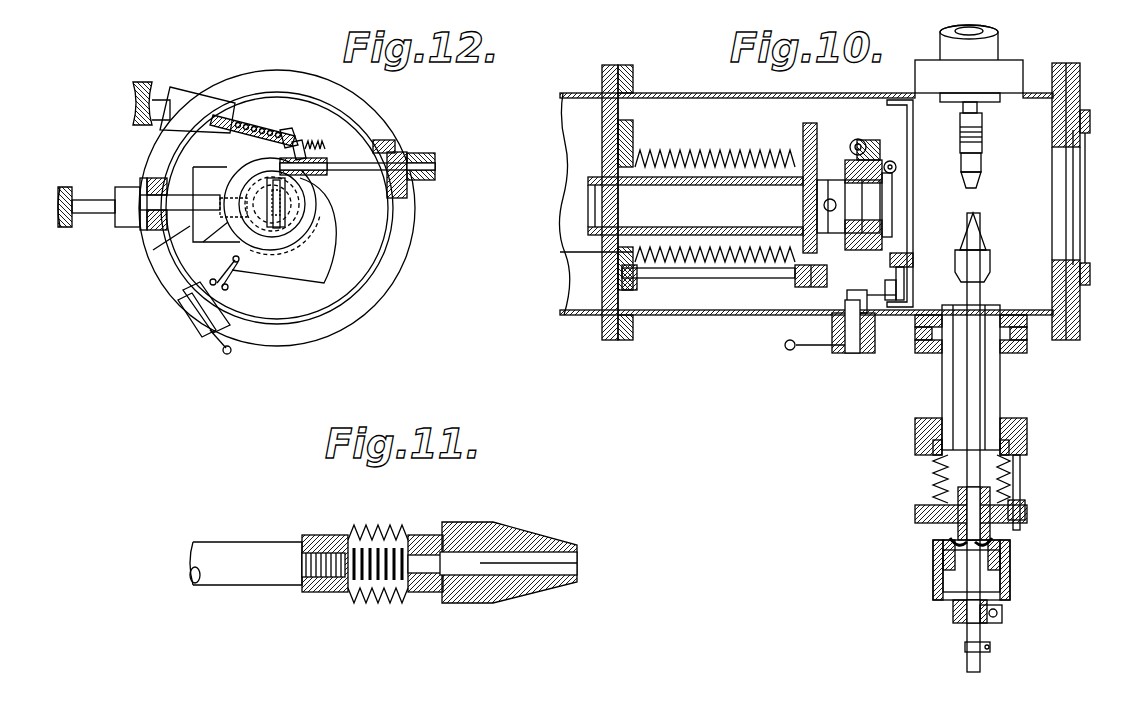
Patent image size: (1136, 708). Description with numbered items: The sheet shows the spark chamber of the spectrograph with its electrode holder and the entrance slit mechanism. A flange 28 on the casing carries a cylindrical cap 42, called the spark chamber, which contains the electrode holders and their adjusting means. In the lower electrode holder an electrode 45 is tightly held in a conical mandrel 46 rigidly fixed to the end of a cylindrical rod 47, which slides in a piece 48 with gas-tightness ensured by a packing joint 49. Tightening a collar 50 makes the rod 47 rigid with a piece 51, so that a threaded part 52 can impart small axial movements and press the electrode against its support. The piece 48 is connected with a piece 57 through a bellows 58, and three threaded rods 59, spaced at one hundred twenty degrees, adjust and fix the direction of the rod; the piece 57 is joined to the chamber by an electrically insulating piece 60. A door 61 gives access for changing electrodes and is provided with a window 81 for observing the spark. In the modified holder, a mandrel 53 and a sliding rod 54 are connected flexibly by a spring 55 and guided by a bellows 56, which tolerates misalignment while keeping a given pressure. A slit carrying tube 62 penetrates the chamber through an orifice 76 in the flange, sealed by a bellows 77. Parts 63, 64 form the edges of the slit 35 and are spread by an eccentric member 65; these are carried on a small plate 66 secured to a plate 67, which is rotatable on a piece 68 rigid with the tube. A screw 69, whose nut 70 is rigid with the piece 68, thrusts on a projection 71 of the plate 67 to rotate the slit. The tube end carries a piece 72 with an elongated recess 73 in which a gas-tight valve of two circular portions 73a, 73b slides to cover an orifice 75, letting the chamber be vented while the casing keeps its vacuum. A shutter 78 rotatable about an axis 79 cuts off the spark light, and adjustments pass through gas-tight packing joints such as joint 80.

In FIG. 10, the flange 28 is at (608, 82).
In FIG. 10, the slit 35 is at (914, 195).
In FIG. 12, the slit 35 is at (280, 206).
In FIG. 10, the cylindrical cap 42 is at (722, 95).
In FIG. 10, the electrode 45 is at (976, 222).
In FIG. 10, the conical mandrel 46 is at (988, 250).
In FIG. 10, the cylindrical rod 47 is at (972, 398).
In FIG. 10, the piece 48 is at (985, 528).
In FIG. 10, the packing joint 49 is at (945, 541).
In FIG. 10, the collar 50 is at (1004, 614).
In FIG. 10, the piece 51 is at (952, 602).
In FIG. 10, the threaded part 52 is at (1012, 582).
In FIG. 11, the mandrel 53 is at (500, 560).
In FIG. 11, the sliding rod 54 is at (280, 560).
In FIG. 11, the spring 55 is at (397, 555).
In FIG. 11, the bellows 56 is at (366, 528).
In FIG. 10, the piece 57 is at (1027, 433).
In FIG. 10, the bellows 58 is at (1005, 470).
In FIG. 10, the threaded rods 59 is at (1021, 489).
In FIG. 10, the insulating piece 60 is at (942, 376).
In FIG. 10, the door 61 is at (1081, 97).
In FIG. 10, the slit carrying tube 62 is at (590, 232).
In FIG. 12, the slit edge part 63 is at (275, 232).
In FIG. 12, the slit edge part 64 is at (282, 216).
In FIG. 10, the eccentric member 65 is at (897, 164).
In FIG. 12, the eccentric member 65 is at (305, 158).
In FIG. 10, the small plate 66 is at (870, 140).
In FIG. 12, the small plate 66 is at (303, 199).
In FIG. 10, the plate 67 is at (856, 139).
In FIG. 12, the plate 67 is at (250, 172).
In FIG. 10, the piece 68 is at (850, 170).
In FIG. 12, the screw 69 is at (278, 135).
In FIG. 12, the nut 70 is at (258, 118).
In FIG. 12, the projection 71 is at (299, 142).
In FIG. 12, the piece 72 is at (216, 243).
In FIG. 12, the elongated recess 73 is at (188, 175).
In FIG. 10, the circular valve plate 73a is at (800, 282).
In FIG. 12, the circular valve plate 73a is at (153, 250).
In FIG. 10, the circular valve plate 73b is at (858, 228).
In FIG. 10, the orifice 75 is at (810, 210).
In FIG. 10, the orifice 76 is at (622, 252).
In FIG. 10, the bellows 77 is at (690, 152).
In FIG. 10, the shutter 78 is at (915, 215).
In FIG. 12, the shutter 78 is at (318, 250).
In FIG. 10, the axis 79 is at (910, 260).
In FIG. 12, the axis 79 is at (240, 265).
In FIG. 12, the gas-tight packing joint 80 is at (402, 160).
In FIG. 10, the window 81 is at (1086, 241).